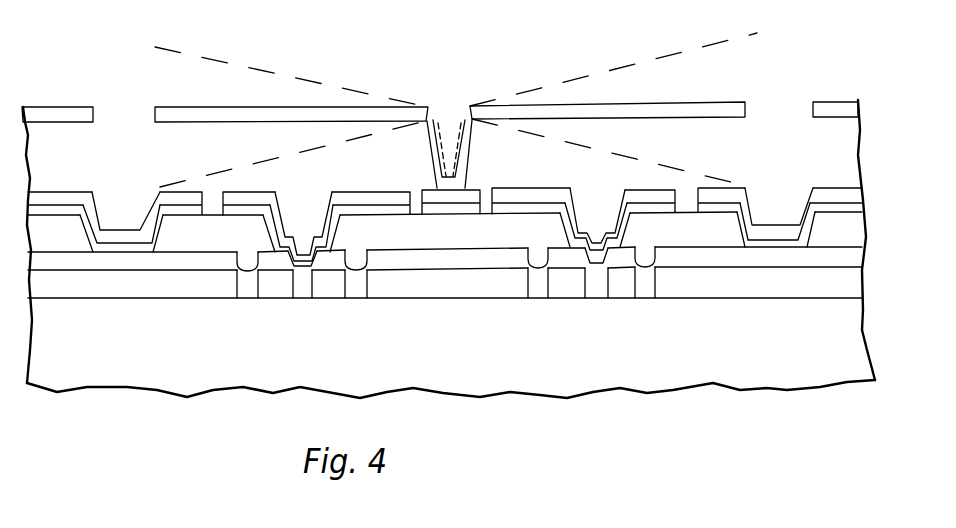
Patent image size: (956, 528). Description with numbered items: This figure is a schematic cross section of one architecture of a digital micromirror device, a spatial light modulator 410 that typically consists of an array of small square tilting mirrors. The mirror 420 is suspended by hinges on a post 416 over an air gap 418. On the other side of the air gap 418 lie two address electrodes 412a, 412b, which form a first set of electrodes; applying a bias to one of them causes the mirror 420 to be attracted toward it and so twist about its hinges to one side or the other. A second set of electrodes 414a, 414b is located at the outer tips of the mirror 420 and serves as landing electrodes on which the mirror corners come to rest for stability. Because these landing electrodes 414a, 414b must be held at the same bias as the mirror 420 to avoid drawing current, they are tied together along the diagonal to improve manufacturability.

The modulator 410 is at (490, 367).
The electrode 412a is at (598, 240).
The electrode 412b is at (304, 246).
The landing electrode 414a is at (773, 235).
The landing electrode 414b is at (117, 236).
The post 416 is at (448, 180).
The air gap 418 is at (530, 177).
The mirror 420 is at (746, 100).